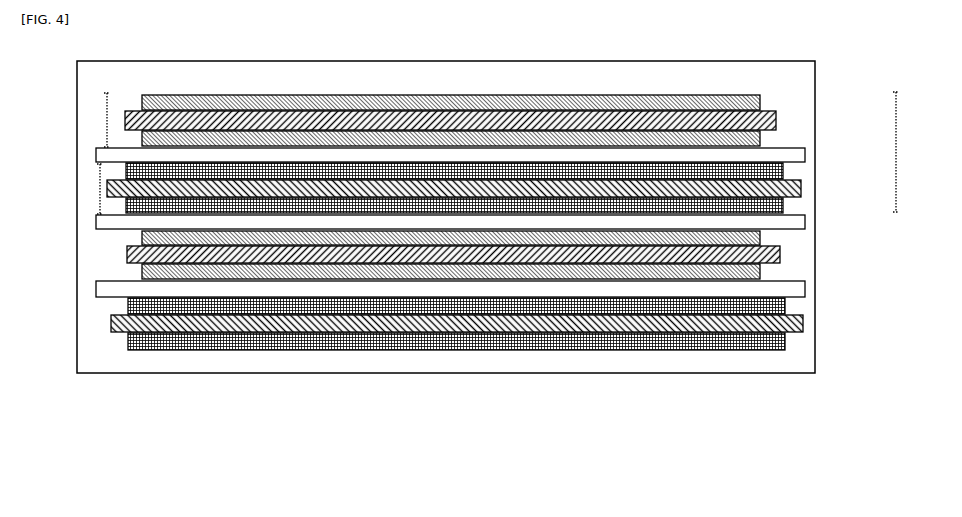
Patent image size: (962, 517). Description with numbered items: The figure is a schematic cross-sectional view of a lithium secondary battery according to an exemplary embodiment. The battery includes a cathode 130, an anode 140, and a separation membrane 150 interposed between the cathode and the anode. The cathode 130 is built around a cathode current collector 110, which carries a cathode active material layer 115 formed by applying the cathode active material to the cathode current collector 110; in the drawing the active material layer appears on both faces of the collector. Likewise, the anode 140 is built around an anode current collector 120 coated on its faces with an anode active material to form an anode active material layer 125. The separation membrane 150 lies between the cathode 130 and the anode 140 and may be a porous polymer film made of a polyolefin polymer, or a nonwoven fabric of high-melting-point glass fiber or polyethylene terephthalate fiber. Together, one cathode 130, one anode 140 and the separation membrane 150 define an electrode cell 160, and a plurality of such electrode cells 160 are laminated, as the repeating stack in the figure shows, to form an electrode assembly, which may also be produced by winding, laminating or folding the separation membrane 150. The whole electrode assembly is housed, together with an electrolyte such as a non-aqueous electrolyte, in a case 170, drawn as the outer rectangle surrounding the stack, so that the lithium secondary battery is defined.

The cathode current collector 110 is at (776, 116).
The cathode active material layer 115 is at (760, 98).
The anode current collector 120 is at (801, 188).
The anode active material layer 125 is at (783, 170).
The cathode 130 is at (104, 109).
The anode 140 is at (97, 201).
The separation membrane 150 is at (94, 157).
The electrode cell 160 is at (910, 152).
The case 170 is at (205, 373).